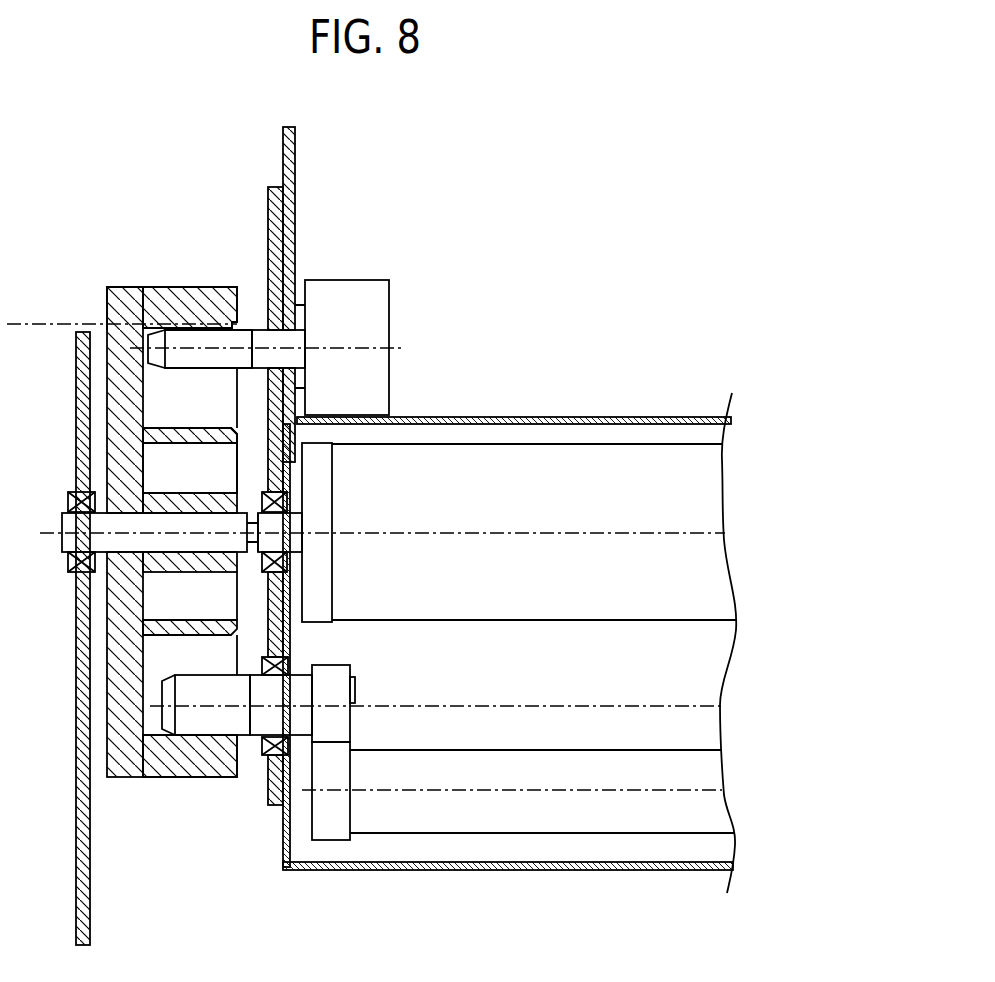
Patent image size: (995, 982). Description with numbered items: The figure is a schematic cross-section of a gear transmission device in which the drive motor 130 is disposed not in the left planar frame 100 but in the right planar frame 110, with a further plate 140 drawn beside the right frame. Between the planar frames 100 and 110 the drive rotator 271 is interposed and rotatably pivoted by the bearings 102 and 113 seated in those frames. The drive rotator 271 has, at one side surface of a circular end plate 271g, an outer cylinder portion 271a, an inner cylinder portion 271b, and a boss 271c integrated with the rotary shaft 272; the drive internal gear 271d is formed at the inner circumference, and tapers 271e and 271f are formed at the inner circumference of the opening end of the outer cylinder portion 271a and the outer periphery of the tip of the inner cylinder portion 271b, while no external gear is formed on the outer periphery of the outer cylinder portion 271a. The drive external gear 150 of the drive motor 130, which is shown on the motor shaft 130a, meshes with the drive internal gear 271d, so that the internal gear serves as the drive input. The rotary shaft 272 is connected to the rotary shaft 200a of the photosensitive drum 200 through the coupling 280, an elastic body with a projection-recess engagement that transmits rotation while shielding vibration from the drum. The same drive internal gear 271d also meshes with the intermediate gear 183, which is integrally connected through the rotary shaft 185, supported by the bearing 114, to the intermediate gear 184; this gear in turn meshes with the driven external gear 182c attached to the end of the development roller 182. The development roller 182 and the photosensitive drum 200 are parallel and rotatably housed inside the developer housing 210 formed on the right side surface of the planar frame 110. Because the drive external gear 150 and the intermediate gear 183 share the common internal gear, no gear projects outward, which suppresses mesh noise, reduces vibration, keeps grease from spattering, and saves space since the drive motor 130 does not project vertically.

The side plate 140 is at (293, 153).
The first planar frame 110 is at (270, 206).
The planar frame 100 is at (77, 401).
The drive rotator 271 is at (175, 276).
The outer cylinder portion 271a is at (223, 303).
The circular end plate 271g is at (107, 300).
The inner cylinder portion 271b is at (147, 427).
The boss 271c is at (178, 490).
The drive internal gear 271d is at (193, 736).
The taper 271e is at (248, 330).
The taper 271f is at (233, 431).
The drive external gear 150 is at (229, 364).
The motor shaft 130a is at (271, 357).
The drive motor 130 is at (345, 281).
The bearing 102 is at (70, 494).
The rotary shaft 272 is at (62, 545).
The coupling 280 is at (295, 521).
The bearing 113 is at (292, 503).
The rotary shaft 200a is at (305, 545).
The photosensitive drum 200 is at (640, 467).
The developer housing 210 is at (510, 417).
The bearing 114 is at (290, 666).
The intermediate gear 183 is at (205, 690).
The rotary shaft 185 is at (303, 715).
The intermediate gear 184 is at (341, 675).
The driven external gear 182c is at (332, 822).
The development roller 182 is at (566, 765).